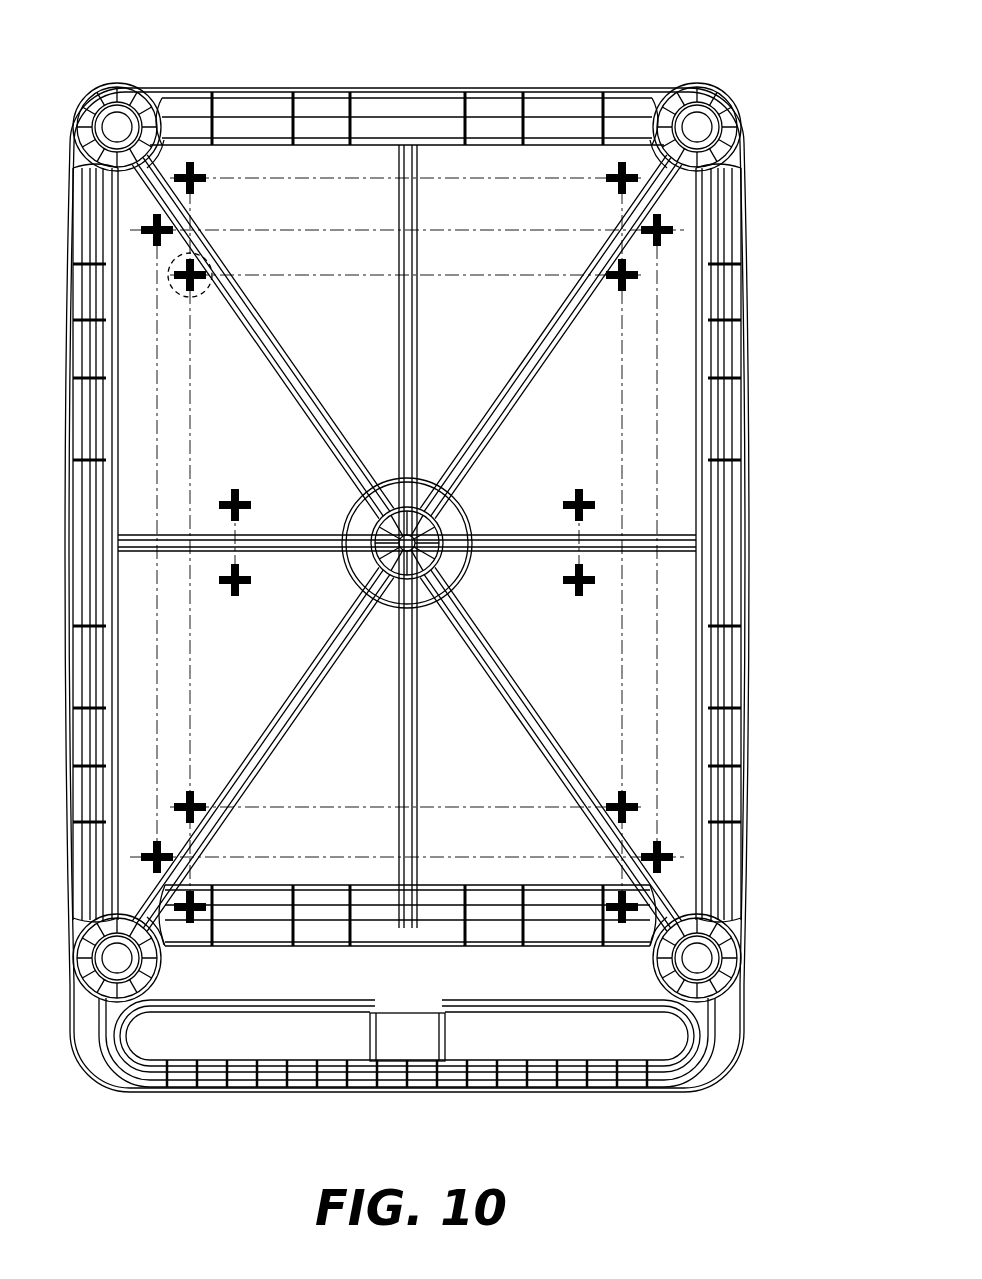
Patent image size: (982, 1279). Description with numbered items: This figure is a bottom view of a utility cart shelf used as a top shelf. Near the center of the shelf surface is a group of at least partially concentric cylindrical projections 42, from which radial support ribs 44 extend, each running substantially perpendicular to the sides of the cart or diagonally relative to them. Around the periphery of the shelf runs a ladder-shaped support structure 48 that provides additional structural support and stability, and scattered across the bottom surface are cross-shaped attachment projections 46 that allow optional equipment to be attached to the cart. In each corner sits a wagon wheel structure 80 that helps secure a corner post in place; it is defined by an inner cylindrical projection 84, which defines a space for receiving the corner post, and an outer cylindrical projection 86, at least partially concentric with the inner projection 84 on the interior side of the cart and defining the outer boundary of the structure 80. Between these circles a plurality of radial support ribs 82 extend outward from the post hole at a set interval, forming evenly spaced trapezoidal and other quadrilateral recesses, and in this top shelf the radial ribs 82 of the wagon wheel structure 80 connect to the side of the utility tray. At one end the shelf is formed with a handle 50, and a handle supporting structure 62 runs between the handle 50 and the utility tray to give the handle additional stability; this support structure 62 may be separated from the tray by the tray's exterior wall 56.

The concentric cylindrical projections 42 is at (432, 610).
The radial support ribs 44 is at (492, 446).
The cross-shaped attachment projections 46 is at (235, 492).
The ladder-shaped support structure 48 is at (745, 308).
The handle 50 is at (318, 1105).
The exterior wall 56 is at (603, 1012).
The handle supporting structure 62 is at (448, 1032).
The wagon wheel structure 80 is at (735, 968).
The radial support ribs 82 is at (728, 155).
The inner cylindrical projection 84 is at (697, 100).
The outer cylindrical projection 86 is at (622, 103).